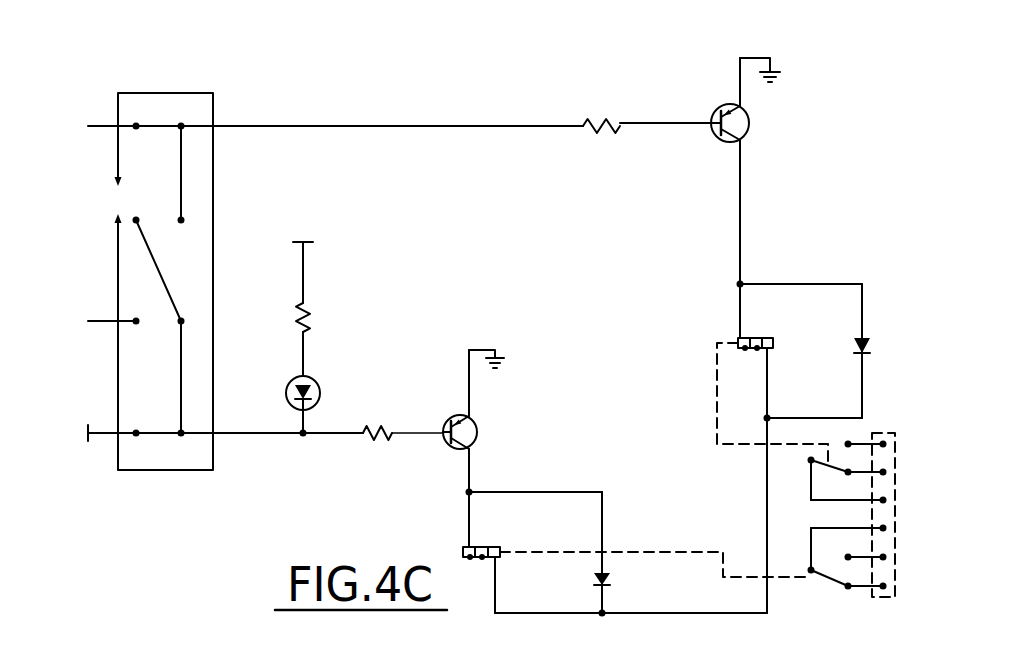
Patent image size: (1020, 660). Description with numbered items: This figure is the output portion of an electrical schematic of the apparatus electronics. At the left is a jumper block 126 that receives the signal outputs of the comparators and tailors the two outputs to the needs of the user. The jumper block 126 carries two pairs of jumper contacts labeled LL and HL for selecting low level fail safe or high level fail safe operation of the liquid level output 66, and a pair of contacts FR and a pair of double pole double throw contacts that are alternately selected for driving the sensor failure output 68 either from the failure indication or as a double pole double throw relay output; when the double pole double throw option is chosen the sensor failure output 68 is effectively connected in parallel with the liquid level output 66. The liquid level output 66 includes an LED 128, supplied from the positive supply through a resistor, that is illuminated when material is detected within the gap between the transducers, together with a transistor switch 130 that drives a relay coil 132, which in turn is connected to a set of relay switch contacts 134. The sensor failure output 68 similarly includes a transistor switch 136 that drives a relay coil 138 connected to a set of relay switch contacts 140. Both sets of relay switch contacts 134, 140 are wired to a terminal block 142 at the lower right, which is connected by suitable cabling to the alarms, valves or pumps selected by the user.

The liquid level output 66 is at (434, 323).
The sensor failure output 68 is at (784, 264).
The jumper block 126 is at (213, 93).
The LED 128 is at (318, 379).
The transistor switch 130 is at (478, 429).
The relay coil 132 is at (494, 545).
The relay switch contacts 134 is at (811, 545).
The transistor switch 136 is at (726, 141).
The relay coil 138 is at (752, 337).
The relay switch contacts 140 is at (811, 465).
The terminal block 142 is at (872, 597).